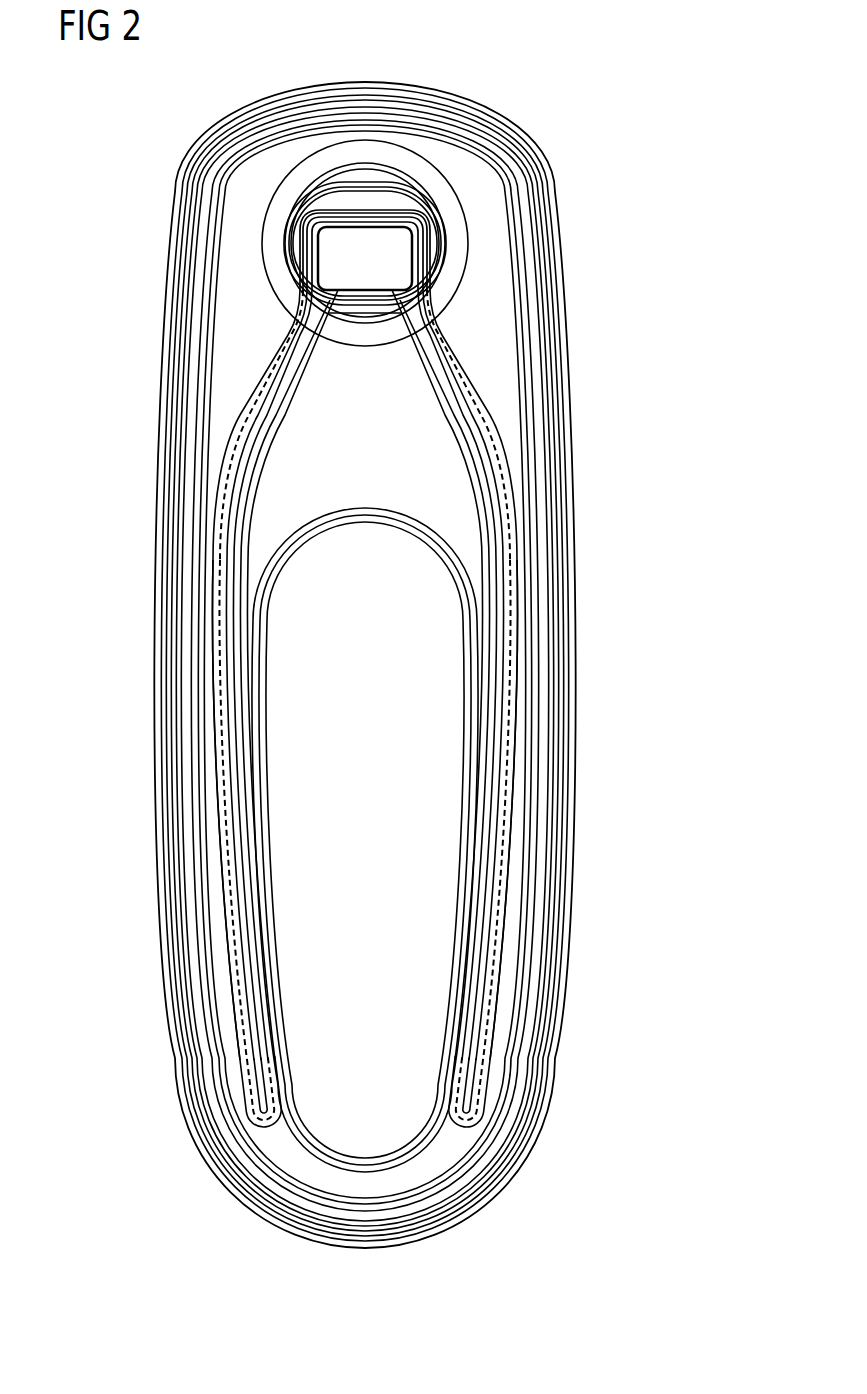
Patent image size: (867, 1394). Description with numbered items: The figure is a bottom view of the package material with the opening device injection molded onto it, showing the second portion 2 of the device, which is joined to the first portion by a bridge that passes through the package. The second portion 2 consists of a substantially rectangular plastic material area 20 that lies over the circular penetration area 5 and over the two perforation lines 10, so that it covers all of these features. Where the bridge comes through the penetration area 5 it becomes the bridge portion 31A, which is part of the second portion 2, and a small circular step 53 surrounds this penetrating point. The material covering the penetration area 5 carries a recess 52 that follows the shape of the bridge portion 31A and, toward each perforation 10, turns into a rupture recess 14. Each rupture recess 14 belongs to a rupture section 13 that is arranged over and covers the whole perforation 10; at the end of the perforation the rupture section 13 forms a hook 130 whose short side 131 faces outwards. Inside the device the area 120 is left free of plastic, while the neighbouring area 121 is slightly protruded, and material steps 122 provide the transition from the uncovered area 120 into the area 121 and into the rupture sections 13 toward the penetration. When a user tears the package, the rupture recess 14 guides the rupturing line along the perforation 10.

The second portion 2 is at (112, 282).
The plastic material area 20 is at (165, 396).
The penetration area 5 is at (290, 157).
The circular step 53 is at (298, 224).
The recess 52 is at (348, 212).
The bridge portion 31A is at (378, 225).
The rupture section 13 is at (297, 388).
The rupture recess 14 is at (232, 536).
The perforation line 10 is at (243, 930).
The short side 131 is at (240, 1086).
The hook 130 is at (268, 1124).
The material step 122 is at (408, 523).
The uncovered area 120 is at (386, 677).
The protruded area 121 is at (391, 452).